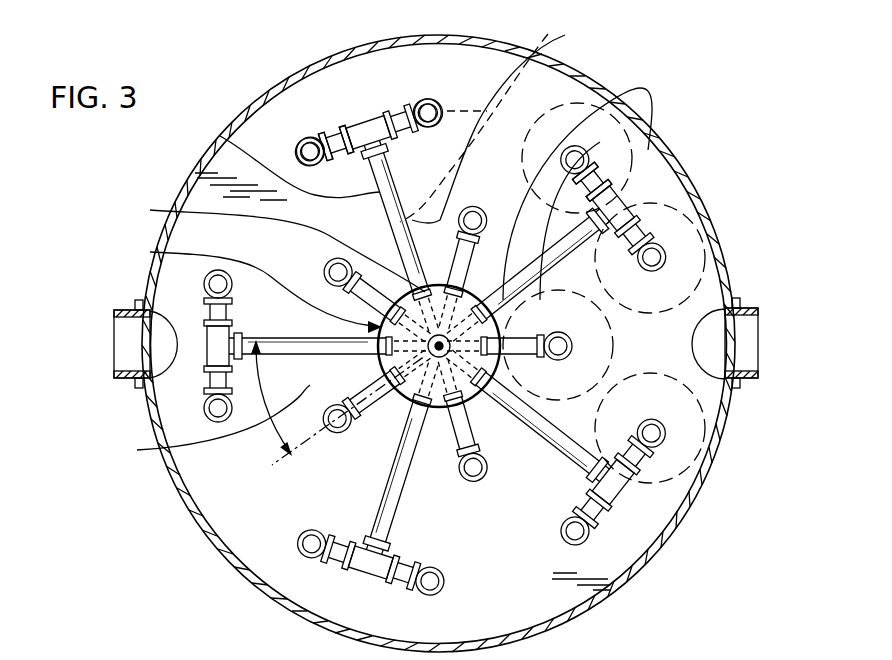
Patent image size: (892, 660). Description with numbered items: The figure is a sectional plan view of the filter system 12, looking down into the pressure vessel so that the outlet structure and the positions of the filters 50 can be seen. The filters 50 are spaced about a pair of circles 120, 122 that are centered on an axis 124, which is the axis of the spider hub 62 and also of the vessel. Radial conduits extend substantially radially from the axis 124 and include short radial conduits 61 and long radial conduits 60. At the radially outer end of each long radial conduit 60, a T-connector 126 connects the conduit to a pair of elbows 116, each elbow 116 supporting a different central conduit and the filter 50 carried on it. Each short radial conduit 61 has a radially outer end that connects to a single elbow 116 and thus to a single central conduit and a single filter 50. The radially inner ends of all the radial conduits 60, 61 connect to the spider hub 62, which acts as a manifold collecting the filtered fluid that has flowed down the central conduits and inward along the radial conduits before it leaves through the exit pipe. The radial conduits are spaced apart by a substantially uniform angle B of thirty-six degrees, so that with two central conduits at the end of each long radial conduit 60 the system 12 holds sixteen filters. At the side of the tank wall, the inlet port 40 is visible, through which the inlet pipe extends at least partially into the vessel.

The filter system 12 is at (128, 164).
The inlet port 40 is at (738, 300).
The filter 50 is at (697, 210).
The long radial conduit 60 is at (220, 136).
The short radial conduit 61 is at (598, 100).
The spider hub 62 is at (150, 252).
The elbow 116 is at (305, 136).
The first circle 120 is at (514, 122).
The second circle 122 is at (458, 110).
The axis 124 is at (150, 211).
The T-connector 126 is at (358, 118).
The angle B is at (150, 452).